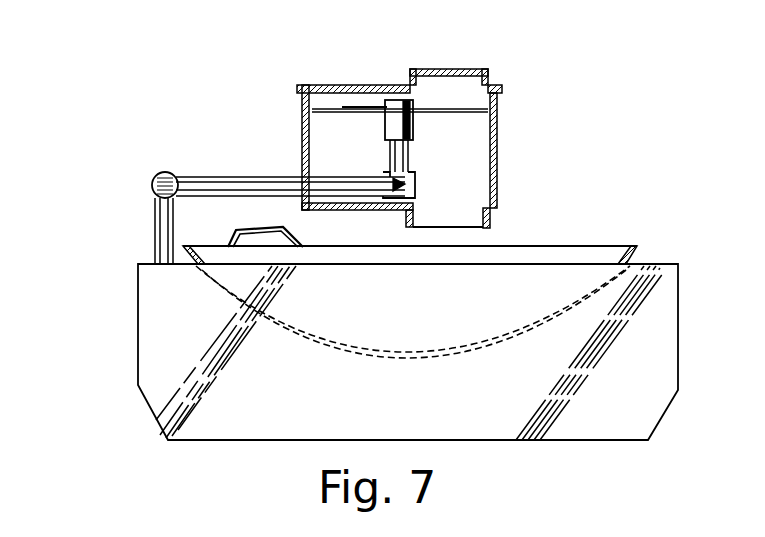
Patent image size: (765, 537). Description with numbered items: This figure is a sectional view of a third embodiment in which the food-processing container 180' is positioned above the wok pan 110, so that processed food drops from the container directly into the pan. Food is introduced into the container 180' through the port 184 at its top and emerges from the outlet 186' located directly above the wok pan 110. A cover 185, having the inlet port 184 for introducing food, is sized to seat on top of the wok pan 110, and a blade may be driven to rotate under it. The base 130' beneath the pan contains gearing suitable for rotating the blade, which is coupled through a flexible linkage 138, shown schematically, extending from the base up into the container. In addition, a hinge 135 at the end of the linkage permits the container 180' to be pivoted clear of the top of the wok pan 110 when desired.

The wok pan 110 is at (197, 241).
The base 130' is at (370, 343).
The hinge 135 is at (152, 187).
The flexible linkage 138 is at (319, 210).
The container 180' is at (365, 127).
The port 184 is at (458, 70).
The cover 185 is at (343, 86).
The outlet 186' is at (428, 220).